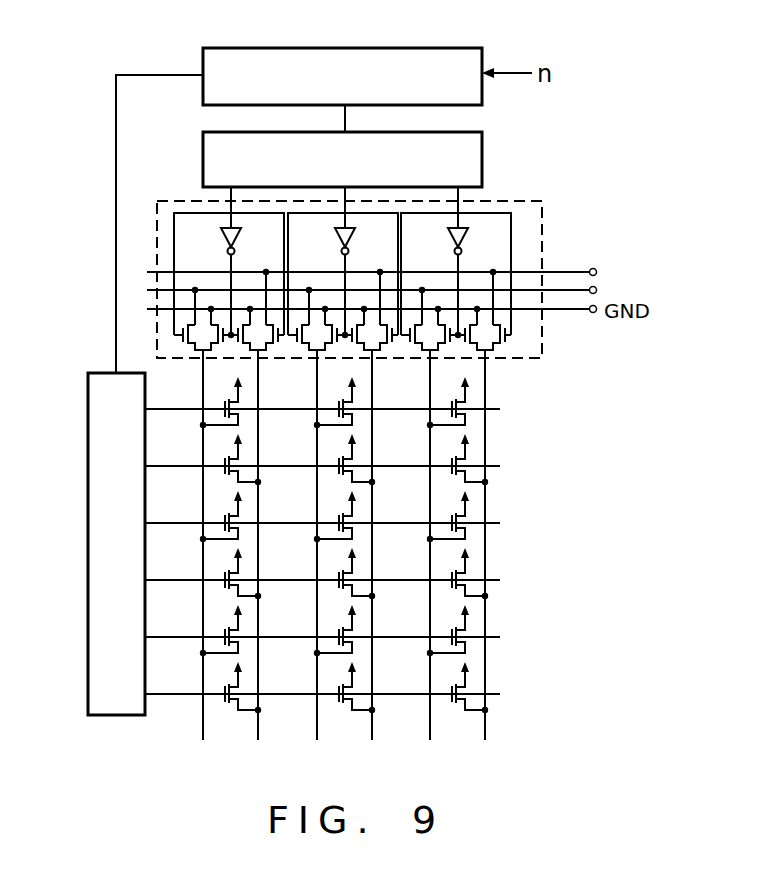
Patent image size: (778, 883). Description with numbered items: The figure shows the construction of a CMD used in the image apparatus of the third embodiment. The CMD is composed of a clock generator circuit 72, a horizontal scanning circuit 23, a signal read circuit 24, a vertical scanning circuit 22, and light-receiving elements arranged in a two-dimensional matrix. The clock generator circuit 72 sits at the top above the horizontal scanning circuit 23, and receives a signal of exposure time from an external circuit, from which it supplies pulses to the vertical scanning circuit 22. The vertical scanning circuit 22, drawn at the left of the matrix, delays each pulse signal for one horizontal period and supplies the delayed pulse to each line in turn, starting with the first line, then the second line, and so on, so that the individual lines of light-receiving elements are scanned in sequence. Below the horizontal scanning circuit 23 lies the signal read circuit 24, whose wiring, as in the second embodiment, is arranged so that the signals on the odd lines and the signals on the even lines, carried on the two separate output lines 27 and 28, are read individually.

The clock generator circuit 72 is at (482, 58).
The horizontal scanning circuit 23 is at (482, 155).
The signal read circuit 24 is at (545, 203).
The signal line SIGb 28 is at (553, 270).
The signal line SIGa 27 is at (574, 288).
The vertical scanning circuit 22 is at (88, 432).